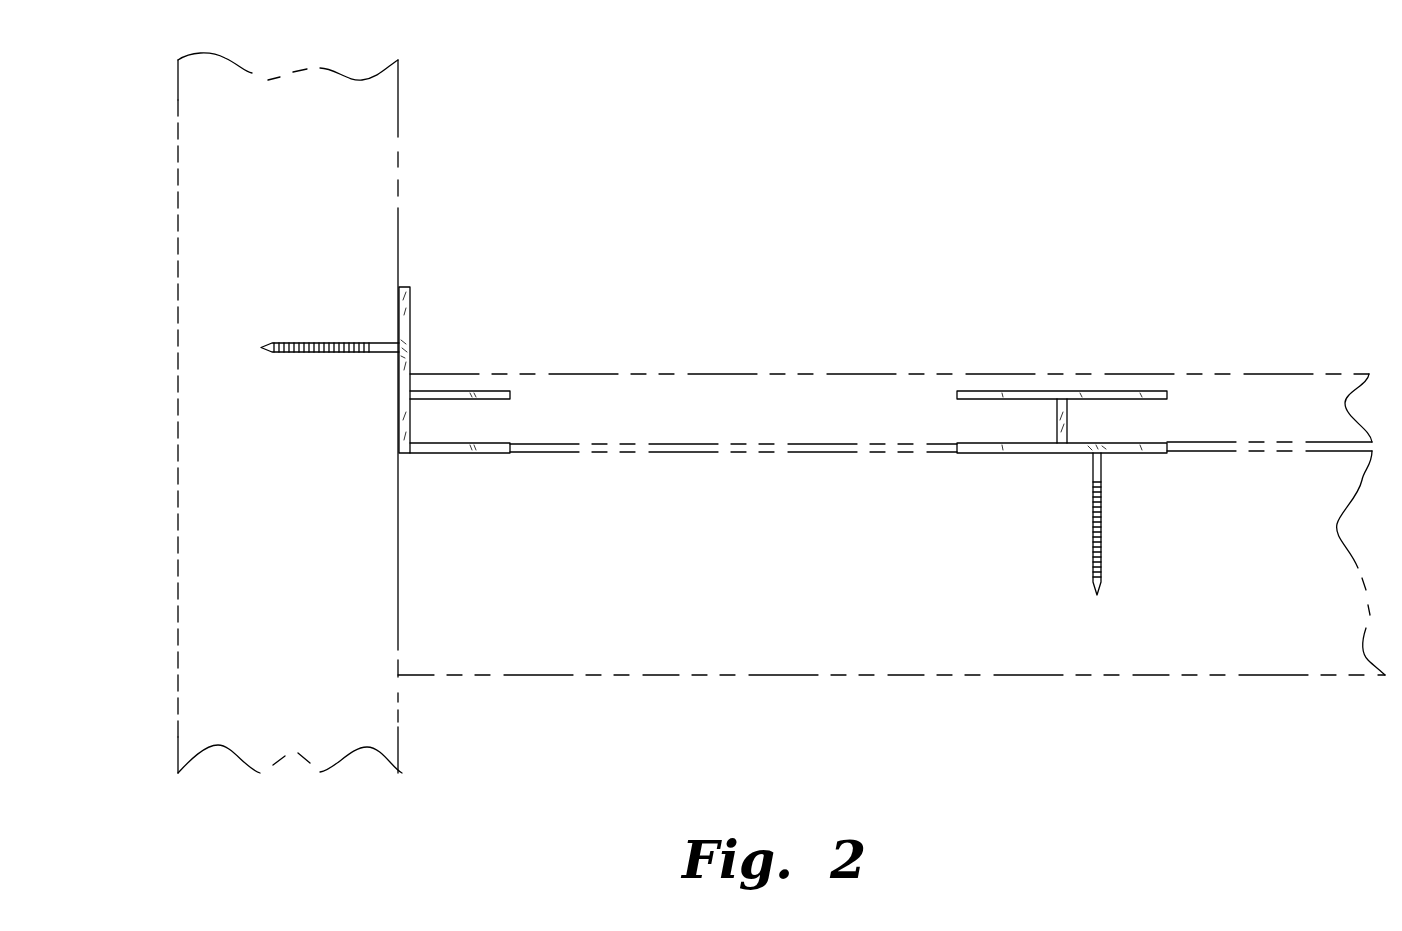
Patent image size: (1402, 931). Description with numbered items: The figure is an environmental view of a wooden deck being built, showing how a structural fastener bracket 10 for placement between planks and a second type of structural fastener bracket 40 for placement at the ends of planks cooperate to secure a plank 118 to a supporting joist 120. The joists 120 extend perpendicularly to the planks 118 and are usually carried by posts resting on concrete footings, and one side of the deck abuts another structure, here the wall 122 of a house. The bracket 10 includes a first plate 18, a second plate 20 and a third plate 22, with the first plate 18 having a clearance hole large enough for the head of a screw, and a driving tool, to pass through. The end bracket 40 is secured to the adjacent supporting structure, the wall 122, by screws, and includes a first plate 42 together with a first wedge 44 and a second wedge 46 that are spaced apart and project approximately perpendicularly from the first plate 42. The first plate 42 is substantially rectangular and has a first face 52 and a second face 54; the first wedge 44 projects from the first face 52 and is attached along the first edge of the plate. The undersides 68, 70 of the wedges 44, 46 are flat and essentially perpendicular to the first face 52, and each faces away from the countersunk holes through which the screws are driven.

The structural fastener bracket 10 is at (1079, 398).
The first plate 18 is at (1155, 390).
The second plate 20 is at (1018, 455).
The third plate 22 is at (1068, 424).
The structural fastener bracket 40 is at (452, 371).
The first plate 42 is at (398, 405).
The first wedge 44 is at (486, 455).
The second wedge 46 is at (487, 390).
The first face 52 is at (412, 297).
The second face 54 is at (398, 379).
The underside 68 is at (443, 455).
The underside 70 is at (480, 401).
The wooden plank 118 is at (757, 374).
The joist 120 is at (797, 675).
The wall 122 is at (397, 117).